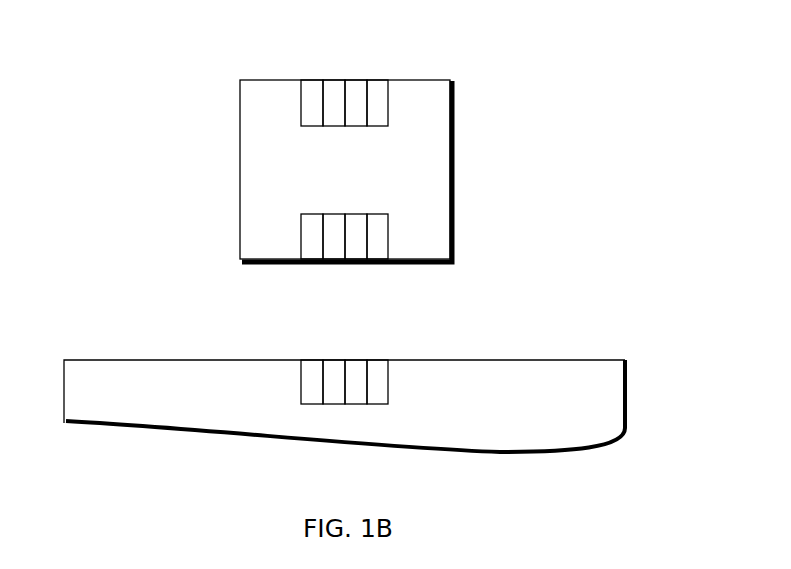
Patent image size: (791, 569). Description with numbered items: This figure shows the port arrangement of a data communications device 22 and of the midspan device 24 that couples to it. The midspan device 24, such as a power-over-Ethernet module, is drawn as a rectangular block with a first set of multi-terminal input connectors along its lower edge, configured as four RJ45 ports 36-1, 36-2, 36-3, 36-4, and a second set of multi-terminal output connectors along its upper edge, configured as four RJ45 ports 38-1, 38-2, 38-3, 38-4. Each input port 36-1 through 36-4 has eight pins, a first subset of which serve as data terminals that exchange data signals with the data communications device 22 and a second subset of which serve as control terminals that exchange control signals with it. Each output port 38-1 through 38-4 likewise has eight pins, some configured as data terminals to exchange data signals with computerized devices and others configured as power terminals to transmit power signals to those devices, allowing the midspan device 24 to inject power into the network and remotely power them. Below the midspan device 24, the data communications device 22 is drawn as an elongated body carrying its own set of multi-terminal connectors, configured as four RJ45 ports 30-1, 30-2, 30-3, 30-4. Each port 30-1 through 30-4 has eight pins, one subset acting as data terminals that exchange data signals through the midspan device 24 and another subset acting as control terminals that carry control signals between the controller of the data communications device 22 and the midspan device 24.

The midspan device 24 is at (360, 197).
The output connector port 38-1 is at (377, 80).
The output connector port 38-2 is at (353, 80).
The output connector port 38-3 is at (335, 80).
The output connector port 38-4 is at (310, 80).
The input connector port 36-1 is at (379, 259).
The input connector port 36-2 is at (357, 259).
The input connector port 36-3 is at (330, 259).
The input connector port 36-4 is at (308, 259).
The data communications device 22 is at (528, 360).
The multi-terminal connector port 30-1 is at (388, 378).
The multi-terminal connector port 30-2 is at (358, 404).
The multi-terminal connector port 30-3 is at (332, 404).
The multi-terminal connector port 30-4 is at (301, 375).